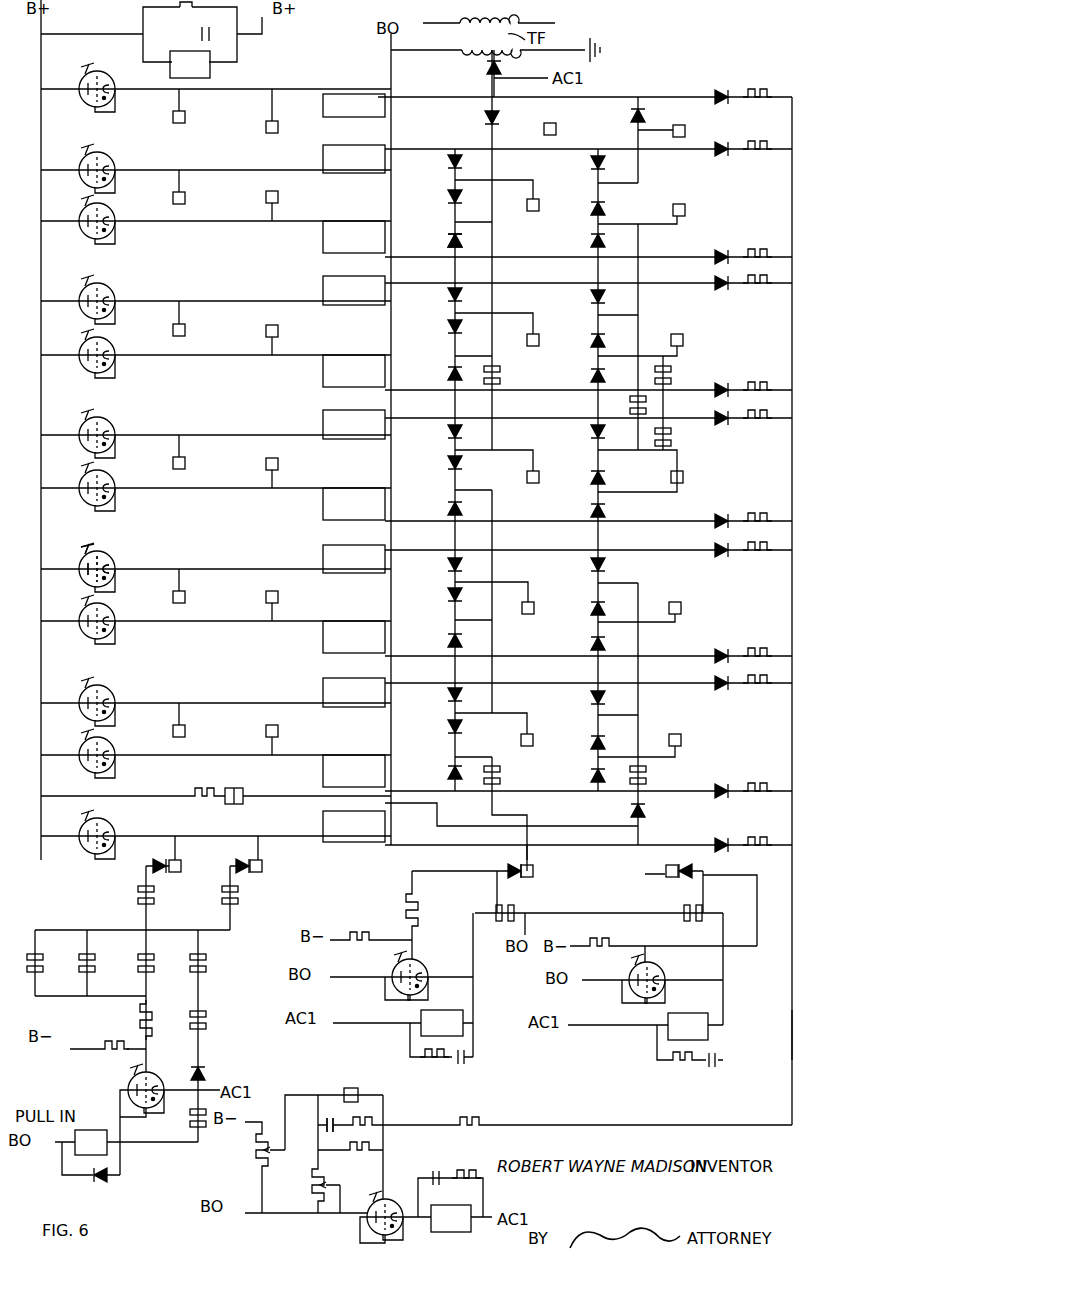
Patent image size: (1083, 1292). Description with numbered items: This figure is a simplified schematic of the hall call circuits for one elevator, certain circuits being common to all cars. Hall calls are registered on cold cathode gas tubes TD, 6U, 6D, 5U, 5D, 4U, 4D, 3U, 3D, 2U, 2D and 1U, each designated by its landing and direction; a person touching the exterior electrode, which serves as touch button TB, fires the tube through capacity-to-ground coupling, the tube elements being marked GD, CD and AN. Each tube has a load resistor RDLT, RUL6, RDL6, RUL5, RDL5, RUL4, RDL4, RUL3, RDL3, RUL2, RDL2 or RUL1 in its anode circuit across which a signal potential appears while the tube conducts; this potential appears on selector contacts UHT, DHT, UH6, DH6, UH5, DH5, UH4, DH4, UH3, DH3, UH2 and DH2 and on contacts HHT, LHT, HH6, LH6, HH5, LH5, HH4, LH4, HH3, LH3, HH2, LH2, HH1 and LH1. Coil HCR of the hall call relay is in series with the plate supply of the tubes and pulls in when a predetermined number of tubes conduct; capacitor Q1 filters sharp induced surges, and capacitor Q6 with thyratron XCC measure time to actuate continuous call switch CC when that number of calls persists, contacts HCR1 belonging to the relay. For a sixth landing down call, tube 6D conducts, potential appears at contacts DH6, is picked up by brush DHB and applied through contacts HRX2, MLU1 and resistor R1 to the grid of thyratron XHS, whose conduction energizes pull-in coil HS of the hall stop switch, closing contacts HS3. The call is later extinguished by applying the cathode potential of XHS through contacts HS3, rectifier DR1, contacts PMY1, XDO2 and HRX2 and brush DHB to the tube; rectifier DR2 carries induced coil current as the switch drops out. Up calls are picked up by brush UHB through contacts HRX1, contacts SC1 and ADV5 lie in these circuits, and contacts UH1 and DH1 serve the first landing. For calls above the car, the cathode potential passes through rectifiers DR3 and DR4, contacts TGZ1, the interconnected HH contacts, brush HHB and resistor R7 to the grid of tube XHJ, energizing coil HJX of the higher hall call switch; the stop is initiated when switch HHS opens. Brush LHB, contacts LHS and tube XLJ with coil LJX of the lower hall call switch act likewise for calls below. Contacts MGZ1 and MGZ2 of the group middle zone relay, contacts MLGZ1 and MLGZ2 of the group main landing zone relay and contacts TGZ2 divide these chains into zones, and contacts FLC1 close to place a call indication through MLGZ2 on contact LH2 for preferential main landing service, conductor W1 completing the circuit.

The capacitor Q1 is at (198, 30).
The hall call relay coil HCR is at (190, 64).
The tube TD is at (80, 87).
The tube 6U is at (81, 168).
The cold cathode gas tube 6D is at (81, 219).
The tube 5U is at (81, 299).
The tube 5D is at (81, 353).
The tube 4U is at (81, 433).
The tube 4D is at (81, 486).
The cold cathode gas tube 3U is at (81, 567).
The tube 3D is at (81, 619).
The tube 2U is at (81, 701).
The cold cathode gas tube 2D is at (81, 753).
The cold cathode gas tube 1U is at (81, 834).
The touch button TB is at (85, 552).
The grid GD is at (95, 552).
The cathode CD is at (110, 566).
The anode AN is at (86, 574).
The hall lamp UHT is at (178, 123).
The hall lamp DHT is at (270, 123).
The hall lamp UH6 is at (200, 210).
The selector contacts DH6 is at (305, 188).
The hall lamp UH5 is at (200, 341).
The hall lamp DH5 is at (305, 322).
The hall lamp UH4 is at (200, 475).
The hall lamp DH4 is at (305, 455).
The hall lamp UH3 is at (200, 608).
The hall lamp DH3 is at (305, 588).
The hall lamp UH2 is at (200, 741).
The hall lamp DH2 is at (305, 722).
The false call switch contacts FLC1 is at (226, 792).
The relay RDLT is at (354, 105).
The relay RUL6 is at (354, 159).
The load resistor RDL6 is at (354, 237).
The relay RUL5 is at (354, 290).
The relay RDL5 is at (354, 371).
The relay RUL4 is at (354, 424).
The relay RDL4 is at (354, 504).
The relay RUL3 is at (354, 559).
The relay RDL3 is at (354, 637).
The relay RUL2 is at (354, 692).
The relay RDL2 is at (354, 771).
The relay RUL1 is at (354, 826).
The rectifier DR3 is at (448, 242).
The rectifier DR4 is at (447, 322).
The lamp HHT is at (553, 138).
The lamp LHT is at (680, 140).
The stationary contact HH6 is at (535, 216).
The lamp LH6 is at (715, 198).
The lamp HH5 is at (535, 349).
The lamp LH5 is at (713, 328).
The lamp HH4 is at (535, 485).
The lamp LH4 is at (713, 465).
The lamp HH3 is at (531, 616).
The lamp LH3 is at (710, 596).
The stationary contact HH2 is at (530, 748).
The lower hall call contact LH2 is at (710, 728).
The group top zone relay contacts TGZ1 is at (525, 366).
The contact TGZ2 is at (630, 404).
The group middle zone relay contacts MGZ2 is at (672, 378).
The group main landing zone relay contacts MLGZ1 is at (672, 448).
The group middle zone relay contacts MGZ1 is at (522, 766).
The group main landing zone relay contacts MLGZ2 is at (670, 766).
The hall call pickup and cancelling brush UHB is at (166, 860).
The lamp UH1 is at (180, 870).
The hall call pickup and cancelling brush DHB is at (242, 860).
The lamp DH1 is at (265, 872).
The contact HRX1 is at (160, 908).
The auxiliary highest call reversal switch contacts HRX2 is at (245, 908).
The main landing up switch contacts MLU1 is at (52, 955).
The contact SC1 is at (108, 955).
The contact ADV5 is at (170, 955).
The start and door open switch contacts XDO2 is at (222, 955).
The resistor R1 is at (158, 1020).
The pawl magnet relay contacts PMY1 is at (218, 1006).
The thyratron tube XHS is at (132, 1080).
The rectifier DR1 is at (212, 1060).
The hall stop switch contacts HS3 is at (192, 1124).
The hall stop switch pull-in coil HS is at (91, 1142).
The rectifier DR2 is at (102, 1176).
The contact HCR1 is at (348, 1090).
The capacitor Q6 is at (348, 1104).
The thyratron tube XCC is at (388, 1190).
The continuous call switch CC is at (451, 1218).
The highest hall call brush HHB is at (510, 866).
The lamp HH1 is at (530, 878).
The resistor R7 is at (425, 910).
The advancer panel switch HHS is at (508, 908).
The thyratron tube XHJ is at (418, 966).
The higher hall call switch HJX is at (442, 1023).
The lowest hall call brush LHB is at (692, 866).
The lamp LH1 is at (646, 872).
The contact LHS is at (692, 908).
The tube XLJ is at (662, 970).
The lower hall call switch LJX is at (688, 1026).
The wire W1 is at (788, 1018).